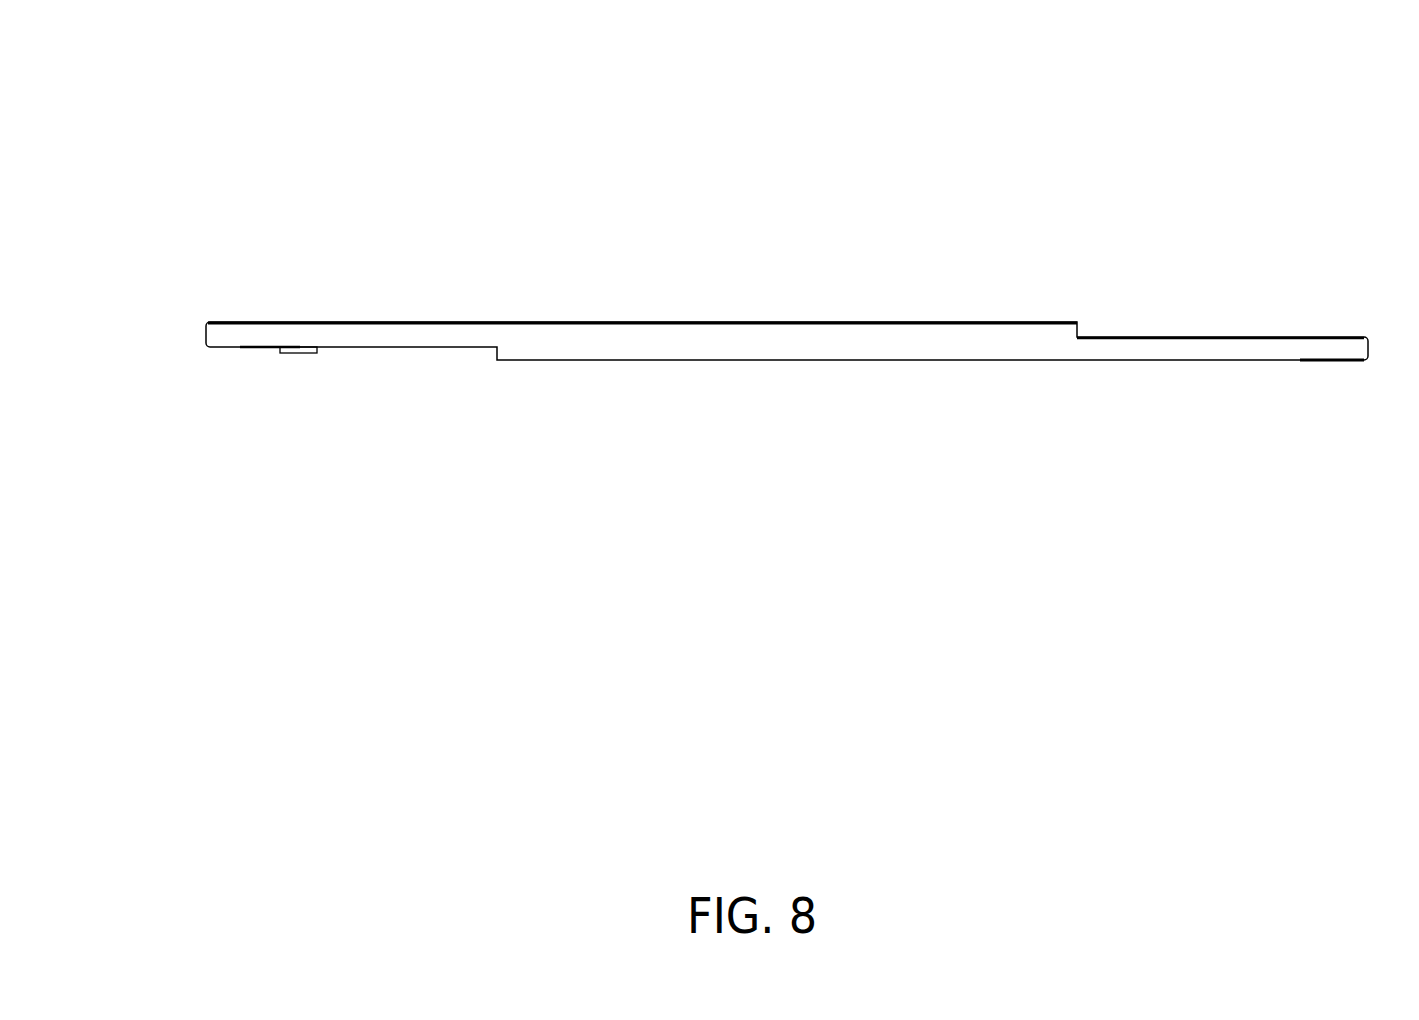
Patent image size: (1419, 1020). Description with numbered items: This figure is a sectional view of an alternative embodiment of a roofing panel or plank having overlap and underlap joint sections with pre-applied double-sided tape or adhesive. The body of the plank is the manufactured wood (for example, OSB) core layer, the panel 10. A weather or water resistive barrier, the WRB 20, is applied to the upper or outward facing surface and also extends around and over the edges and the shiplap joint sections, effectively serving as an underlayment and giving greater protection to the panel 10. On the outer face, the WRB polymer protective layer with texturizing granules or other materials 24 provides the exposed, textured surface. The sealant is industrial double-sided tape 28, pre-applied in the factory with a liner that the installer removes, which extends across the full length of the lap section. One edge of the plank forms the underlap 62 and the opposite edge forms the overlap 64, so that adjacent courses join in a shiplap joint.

The panel 10 is at (682, 343).
The weather or water resistive barrier 20 is at (1337, 395).
The WRB polymer protective layer with texturizing granules 24 is at (284, 322).
The industrial double-sided tape 28 is at (307, 355).
The underlap 62 is at (1233, 283).
The overlap 64 is at (273, 425).